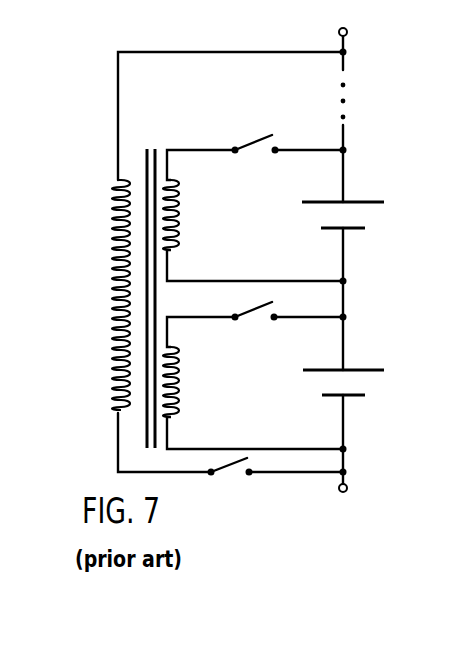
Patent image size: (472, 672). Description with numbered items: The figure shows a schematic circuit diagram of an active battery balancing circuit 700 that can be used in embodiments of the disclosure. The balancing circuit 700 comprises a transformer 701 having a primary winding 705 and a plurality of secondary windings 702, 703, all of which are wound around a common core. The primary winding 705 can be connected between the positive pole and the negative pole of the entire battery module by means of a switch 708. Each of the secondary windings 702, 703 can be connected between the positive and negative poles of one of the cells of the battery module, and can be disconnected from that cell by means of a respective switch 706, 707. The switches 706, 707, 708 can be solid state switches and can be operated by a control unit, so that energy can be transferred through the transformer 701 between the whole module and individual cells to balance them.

The active battery balancing circuit 700 is at (103, 65).
The transformer 701 is at (150, 144).
The secondary winding 702 is at (181, 213).
The secondary winding 703 is at (181, 384).
The primary winding 705 is at (111, 282).
The switch 706 is at (256, 137).
The switch 707 is at (258, 312).
The switch 708 is at (232, 467).